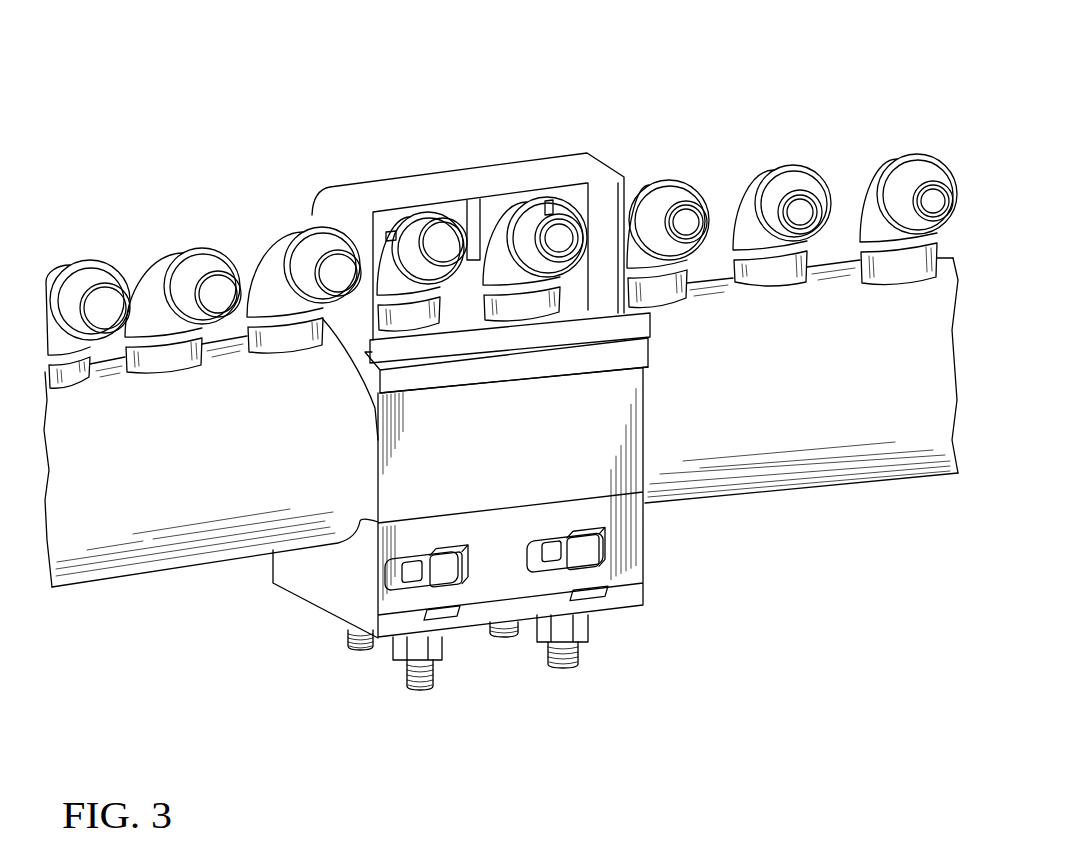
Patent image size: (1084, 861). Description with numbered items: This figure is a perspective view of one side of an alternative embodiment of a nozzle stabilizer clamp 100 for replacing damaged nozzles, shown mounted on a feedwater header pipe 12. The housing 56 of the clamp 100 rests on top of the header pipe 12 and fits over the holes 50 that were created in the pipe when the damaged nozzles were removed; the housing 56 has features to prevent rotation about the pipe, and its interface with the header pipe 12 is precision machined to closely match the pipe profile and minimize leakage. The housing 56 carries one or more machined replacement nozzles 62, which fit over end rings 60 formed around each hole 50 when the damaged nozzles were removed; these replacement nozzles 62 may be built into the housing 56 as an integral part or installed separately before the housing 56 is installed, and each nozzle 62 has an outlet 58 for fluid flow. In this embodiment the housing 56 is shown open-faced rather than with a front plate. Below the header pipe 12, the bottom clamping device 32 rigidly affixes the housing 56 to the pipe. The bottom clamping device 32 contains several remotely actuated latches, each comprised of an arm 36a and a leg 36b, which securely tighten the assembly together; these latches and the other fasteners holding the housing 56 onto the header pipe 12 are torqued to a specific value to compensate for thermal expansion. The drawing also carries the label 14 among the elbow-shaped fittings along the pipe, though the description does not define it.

The clamp 100 is at (283, 87).
The header pipe 12 is at (758, 462).
The elbow connectors 14 is at (770, 178).
The bottom clamping device 32 is at (352, 572).
The arm 36a is at (448, 573).
The leg 36b is at (357, 642).
The holes 50 is at (373, 212).
The housing 56 is at (565, 457).
The outlets 58 is at (440, 243).
The end rings 60 is at (448, 322).
The replacement nozzles 62 is at (398, 258).